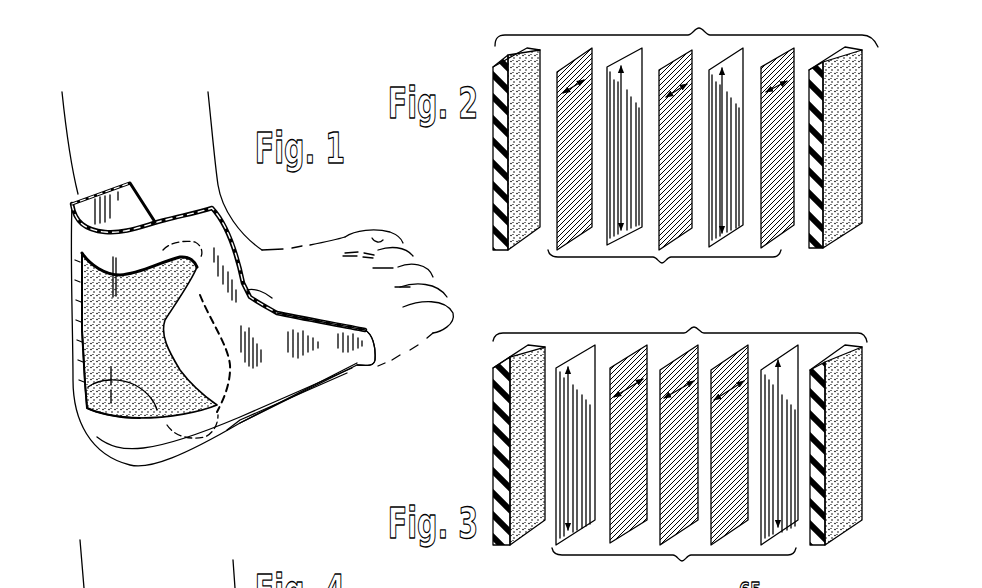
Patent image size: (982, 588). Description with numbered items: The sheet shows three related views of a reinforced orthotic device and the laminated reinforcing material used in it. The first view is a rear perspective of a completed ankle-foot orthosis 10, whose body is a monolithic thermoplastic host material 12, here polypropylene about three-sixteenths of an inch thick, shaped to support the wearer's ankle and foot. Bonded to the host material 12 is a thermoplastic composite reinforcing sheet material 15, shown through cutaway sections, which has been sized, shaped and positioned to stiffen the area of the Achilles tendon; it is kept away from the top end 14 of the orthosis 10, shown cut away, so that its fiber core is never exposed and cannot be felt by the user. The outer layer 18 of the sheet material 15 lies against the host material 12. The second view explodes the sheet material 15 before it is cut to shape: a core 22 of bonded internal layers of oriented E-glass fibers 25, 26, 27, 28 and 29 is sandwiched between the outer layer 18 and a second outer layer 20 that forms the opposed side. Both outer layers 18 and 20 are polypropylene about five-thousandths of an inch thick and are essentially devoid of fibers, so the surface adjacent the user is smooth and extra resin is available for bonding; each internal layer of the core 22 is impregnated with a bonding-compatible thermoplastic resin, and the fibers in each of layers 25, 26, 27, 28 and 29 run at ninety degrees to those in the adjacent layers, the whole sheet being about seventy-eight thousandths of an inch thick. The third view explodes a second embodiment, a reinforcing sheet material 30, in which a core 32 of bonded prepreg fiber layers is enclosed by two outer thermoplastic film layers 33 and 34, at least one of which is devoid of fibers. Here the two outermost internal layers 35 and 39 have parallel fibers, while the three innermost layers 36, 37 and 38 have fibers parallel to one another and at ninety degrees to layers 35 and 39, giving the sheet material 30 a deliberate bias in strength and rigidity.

In FIG. 1, the ankle-foot orthosis 10 is at (102, 462).
In FIG. 1, the thermoplastic host material 12 is at (287, 377).
In FIG. 1, the top end 14 is at (73, 203).
In FIG. 1, the thermoplastic composite reinforcing sheet material 15 is at (133, 310).
In FIG. 2, the thermoplastic composite reinforcing sheet material 15 is at (699, 54).
In FIG. 1, the outer layer 18 is at (98, 343).
In FIG. 2, the outer layer 18 is at (497, 197).
In FIG. 2, the second outer layer 20 is at (860, 130).
In FIG. 2, the core 22 is at (664, 273).
In FIG. 2, the internal layer of oriented fibers 25 is at (557, 234).
In FIG. 2, the internal layer of oriented fibers 26 is at (607, 233).
In FIG. 2, the internal layer of oriented fibers 27 is at (679, 236).
In FIG. 2, the internal layer of oriented fibers 28 is at (742, 229).
In FIG. 2, the internal layer of oriented fibers 29 is at (785, 231).
In FIG. 3, the reinforcing sheet material 30 is at (680, 321).
In FIG. 3, the core 32 is at (674, 568).
In FIG. 3, the outer thermoplastic layer 33 is at (497, 424).
In FIG. 3, the outer thermoplastic layer 34 is at (857, 362).
In FIG. 3, the outermost internal layer 35 is at (583, 358).
In FIG. 3, the innermost internal layer 36 is at (632, 362).
In FIG. 3, the innermost internal layer 37 is at (700, 357).
In FIG. 3, the innermost internal layer 38 is at (750, 357).
In FIG. 3, the outermost internal layer 39 is at (787, 358).